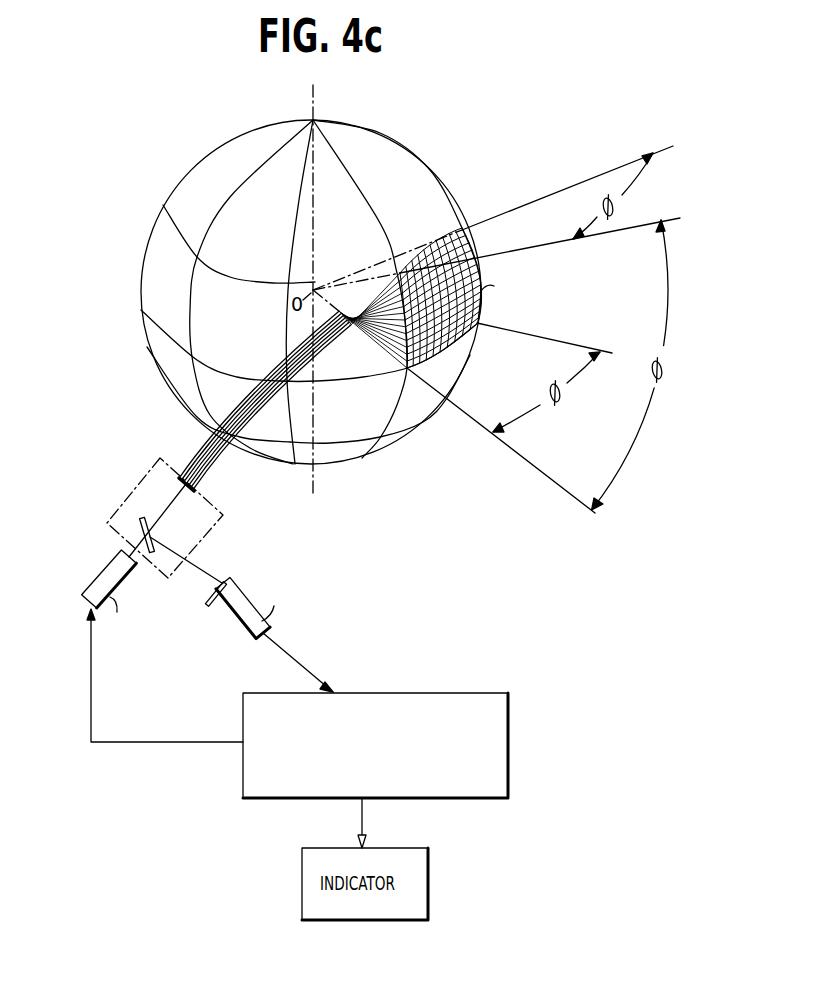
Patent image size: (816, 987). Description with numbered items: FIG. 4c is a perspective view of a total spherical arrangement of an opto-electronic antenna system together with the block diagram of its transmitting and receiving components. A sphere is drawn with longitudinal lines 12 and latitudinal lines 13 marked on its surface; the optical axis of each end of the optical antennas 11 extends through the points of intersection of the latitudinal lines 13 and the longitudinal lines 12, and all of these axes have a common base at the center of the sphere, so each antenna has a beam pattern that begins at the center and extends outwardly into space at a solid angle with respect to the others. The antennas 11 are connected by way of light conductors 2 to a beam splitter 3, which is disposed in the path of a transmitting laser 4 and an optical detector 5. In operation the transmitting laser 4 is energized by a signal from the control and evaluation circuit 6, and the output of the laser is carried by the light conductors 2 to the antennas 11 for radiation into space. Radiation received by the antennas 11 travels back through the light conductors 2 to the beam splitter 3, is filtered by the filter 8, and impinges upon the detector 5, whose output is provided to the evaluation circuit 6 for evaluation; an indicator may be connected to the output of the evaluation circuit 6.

The light conductors 2 is at (195, 466).
The beam splitter 3 is at (158, 522).
The transmitting laser 4 is at (82, 595).
The optical detector 5 is at (253, 606).
The control and evaluation circuit 6 is at (371, 786).
The filter 8 is at (225, 583).
The optical antennas 11 is at (475, 240).
The longitudinal lines 12 is at (232, 197).
The latitudinal lines 13 is at (267, 276).